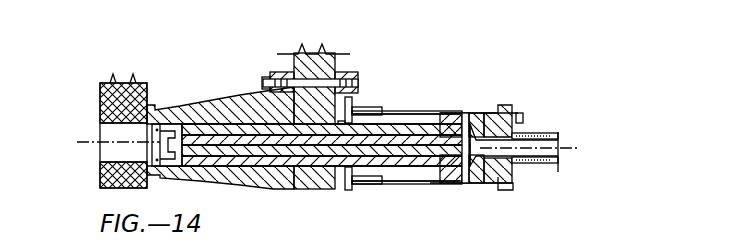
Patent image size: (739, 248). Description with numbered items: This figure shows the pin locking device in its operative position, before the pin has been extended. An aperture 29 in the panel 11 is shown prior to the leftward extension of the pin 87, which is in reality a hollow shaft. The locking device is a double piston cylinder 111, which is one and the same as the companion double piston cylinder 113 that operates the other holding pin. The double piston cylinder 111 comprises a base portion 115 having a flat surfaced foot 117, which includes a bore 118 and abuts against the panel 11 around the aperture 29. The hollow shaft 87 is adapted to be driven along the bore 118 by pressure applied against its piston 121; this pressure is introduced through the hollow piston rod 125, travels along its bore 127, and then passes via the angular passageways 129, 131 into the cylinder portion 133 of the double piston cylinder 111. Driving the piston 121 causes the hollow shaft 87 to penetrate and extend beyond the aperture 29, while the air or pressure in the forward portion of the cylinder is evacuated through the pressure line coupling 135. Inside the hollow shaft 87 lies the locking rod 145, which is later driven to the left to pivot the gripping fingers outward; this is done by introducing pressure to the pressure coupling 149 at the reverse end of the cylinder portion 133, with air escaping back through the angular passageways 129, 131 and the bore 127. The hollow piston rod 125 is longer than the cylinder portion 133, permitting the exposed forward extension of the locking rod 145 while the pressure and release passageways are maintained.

The panel 11 is at (100, 96).
The bore 118 is at (137, 125).
The aperture 29 is at (127, 163).
The flat surfaced foot 117 is at (148, 107).
The locking rod 145 is at (212, 138).
The base portion 115 is at (233, 97).
The pressure line coupling 135 is at (353, 100).
The pin 87 is at (383, 121).
The double piston cylinder 111 is at (403, 172).
The piston 121 is at (448, 110).
The cylinder portion 133 is at (466, 172).
The double piston cylinder 113 is at (478, 114).
The angular passageway 129 is at (489, 127).
The pressure coupling 149 is at (522, 118).
The hollow piston rod 125 is at (543, 135).
The bore 127 is at (558, 147).
The angular passageway 131 is at (512, 181).